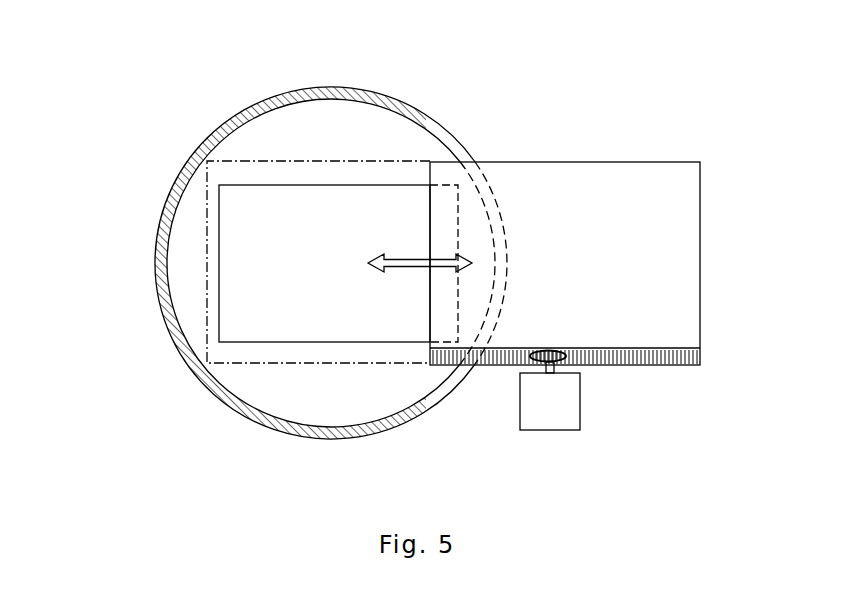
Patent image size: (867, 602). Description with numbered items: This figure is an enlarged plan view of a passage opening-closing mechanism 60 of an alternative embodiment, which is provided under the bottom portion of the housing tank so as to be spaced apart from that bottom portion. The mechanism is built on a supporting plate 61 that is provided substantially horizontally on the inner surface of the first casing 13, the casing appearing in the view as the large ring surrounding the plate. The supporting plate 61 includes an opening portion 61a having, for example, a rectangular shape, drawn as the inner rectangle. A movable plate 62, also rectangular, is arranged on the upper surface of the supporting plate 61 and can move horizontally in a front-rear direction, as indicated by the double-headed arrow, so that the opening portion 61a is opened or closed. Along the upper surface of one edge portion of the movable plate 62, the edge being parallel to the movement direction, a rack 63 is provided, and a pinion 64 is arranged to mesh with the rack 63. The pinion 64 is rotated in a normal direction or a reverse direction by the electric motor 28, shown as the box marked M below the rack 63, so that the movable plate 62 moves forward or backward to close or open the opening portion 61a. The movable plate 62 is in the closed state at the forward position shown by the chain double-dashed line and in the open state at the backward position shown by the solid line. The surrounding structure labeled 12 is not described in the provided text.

The rotating drum 12 is at (320, 225).
The first casing 13 is at (284, 94).
The supporting plate 61 is at (352, 195).
The opening portion 61a is at (348, 205).
The movable plate 62 is at (550, 185).
The rack 63 is at (683, 367).
The pinion 64 is at (580, 363).
The electric motor 28 is at (520, 408).
The passage opening-closing mechanism 60 is at (565, 294).